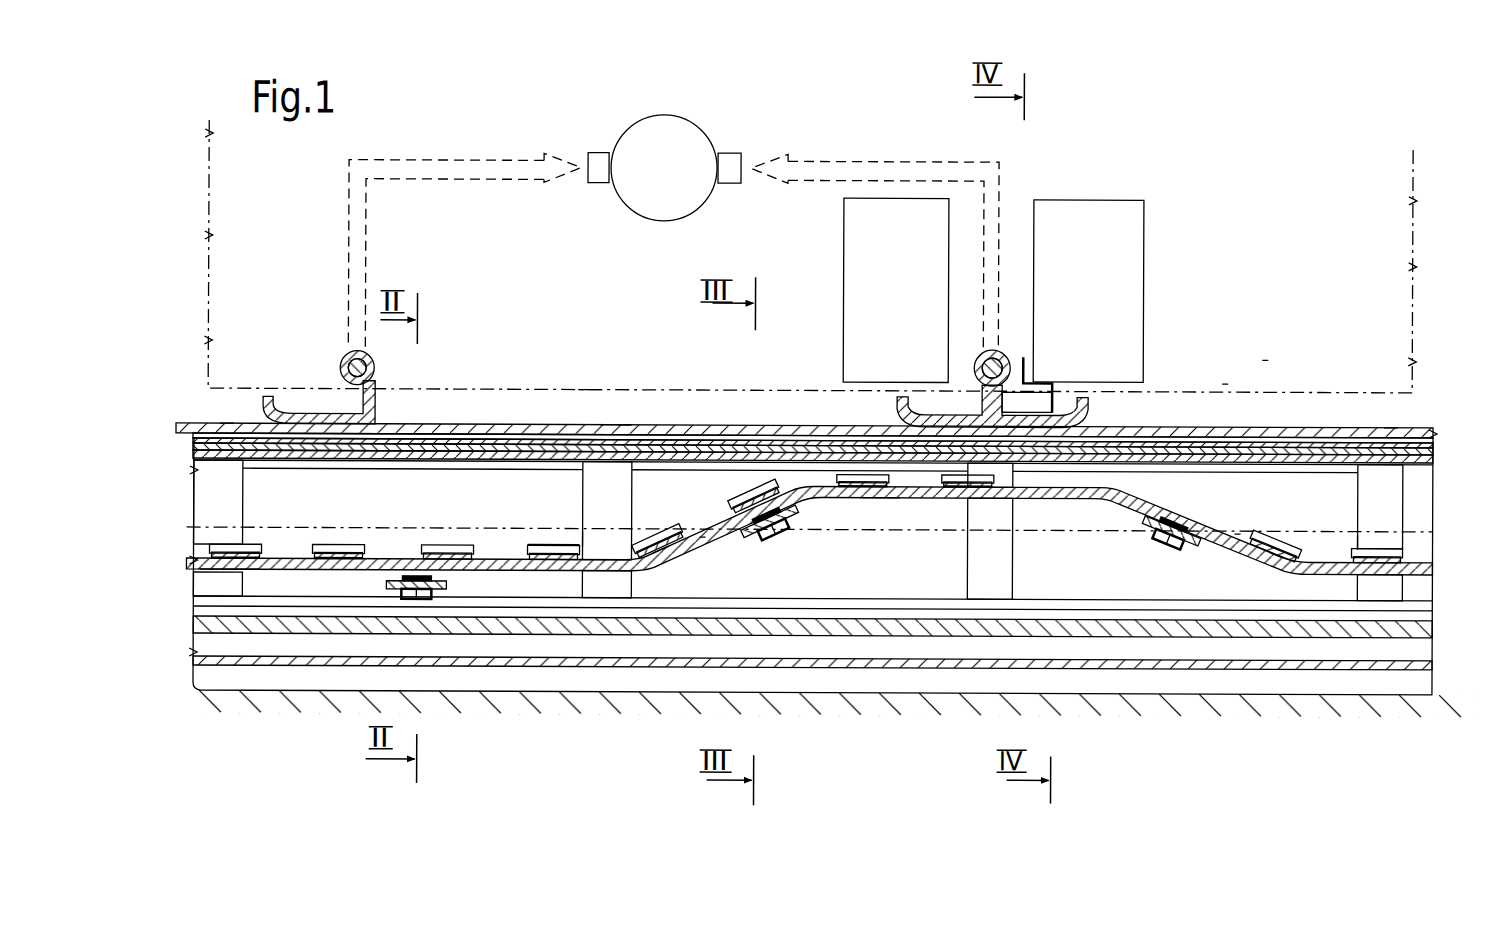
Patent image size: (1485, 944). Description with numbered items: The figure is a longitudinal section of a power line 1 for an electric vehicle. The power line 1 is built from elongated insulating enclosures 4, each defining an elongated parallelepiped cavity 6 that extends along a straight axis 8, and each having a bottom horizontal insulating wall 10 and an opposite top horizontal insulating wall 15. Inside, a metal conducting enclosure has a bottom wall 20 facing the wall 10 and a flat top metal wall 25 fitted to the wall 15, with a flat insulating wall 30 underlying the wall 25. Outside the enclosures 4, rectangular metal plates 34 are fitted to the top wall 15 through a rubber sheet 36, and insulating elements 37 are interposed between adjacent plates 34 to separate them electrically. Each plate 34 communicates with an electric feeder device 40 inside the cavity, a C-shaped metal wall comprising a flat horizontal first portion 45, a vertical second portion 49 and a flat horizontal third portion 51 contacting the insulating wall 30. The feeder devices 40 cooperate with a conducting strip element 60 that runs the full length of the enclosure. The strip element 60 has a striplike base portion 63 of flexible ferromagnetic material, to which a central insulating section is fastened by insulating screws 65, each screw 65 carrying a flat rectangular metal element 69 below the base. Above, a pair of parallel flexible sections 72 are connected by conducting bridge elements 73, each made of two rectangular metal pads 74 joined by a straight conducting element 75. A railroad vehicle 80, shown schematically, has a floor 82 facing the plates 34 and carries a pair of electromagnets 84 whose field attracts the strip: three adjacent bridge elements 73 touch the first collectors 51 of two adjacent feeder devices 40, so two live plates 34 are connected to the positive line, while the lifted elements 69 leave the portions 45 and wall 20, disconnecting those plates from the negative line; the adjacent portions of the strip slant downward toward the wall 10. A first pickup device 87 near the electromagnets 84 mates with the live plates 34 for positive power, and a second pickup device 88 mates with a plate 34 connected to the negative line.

The power line 1 is at (1266, 352).
The insulating enclosure 4 is at (1222, 378).
The cavity 6 is at (728, 652).
The axis 8 is at (1432, 526).
The bottom horizontal insulating wall 10 is at (830, 661).
The top horizontal insulating wall 15 is at (613, 422).
The bottom wall 20 is at (905, 630).
The flat top metal wall 25 is at (763, 432).
The flat insulating wall 30 is at (1125, 450).
The rectangular metal plate 34 is at (470, 422).
The rubber sheet 36 is at (1337, 437).
The insulating element 37 is at (225, 422).
The electric feeder device 40 is at (625, 511).
The flat horizontal first portion 45 is at (508, 594).
The vertical second portion 49 is at (638, 541).
The flat horizontal third portion 51 is at (463, 461).
The conducting strip element 60 is at (538, 531).
The striplike base portion 63 is at (232, 572).
The insulating screw 65 is at (1273, 559).
The flat rectangular metal element 69 is at (445, 582).
The elongated section 72 is at (290, 564).
The conducting bridge element 73 is at (260, 536).
The rectangular metal pad 74 is at (437, 543).
The straight conducting element 75 is at (665, 537).
The railroad vehicle 80 is at (222, 198).
The floor 82 is at (580, 395).
The electromagnet 84 is at (897, 289).
The first pickup device 87 is at (998, 380).
The second pickup device 88 is at (302, 410).